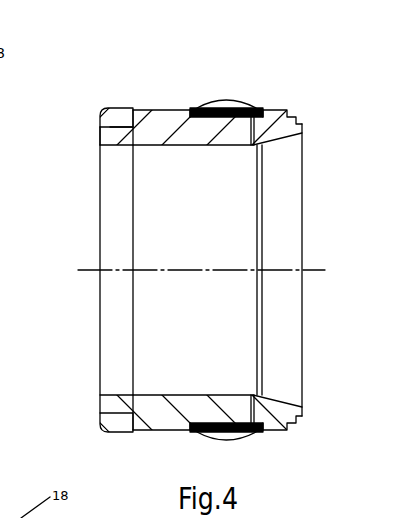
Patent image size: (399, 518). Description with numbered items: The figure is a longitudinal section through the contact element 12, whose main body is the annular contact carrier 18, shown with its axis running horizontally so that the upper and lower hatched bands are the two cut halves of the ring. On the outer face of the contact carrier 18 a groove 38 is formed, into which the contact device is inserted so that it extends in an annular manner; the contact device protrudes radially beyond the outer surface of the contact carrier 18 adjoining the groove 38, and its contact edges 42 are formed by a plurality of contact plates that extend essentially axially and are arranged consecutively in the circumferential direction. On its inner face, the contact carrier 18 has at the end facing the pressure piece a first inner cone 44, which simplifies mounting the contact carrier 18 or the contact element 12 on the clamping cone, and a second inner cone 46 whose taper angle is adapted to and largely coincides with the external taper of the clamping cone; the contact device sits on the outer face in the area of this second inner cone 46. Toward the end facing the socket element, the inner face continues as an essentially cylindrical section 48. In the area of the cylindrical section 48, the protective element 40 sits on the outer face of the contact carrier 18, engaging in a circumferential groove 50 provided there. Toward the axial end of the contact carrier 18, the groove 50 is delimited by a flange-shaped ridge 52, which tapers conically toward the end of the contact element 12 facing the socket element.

The contact element 12 is at (129, 88).
The contact carrier 18 is at (275, 111).
The groove 38 is at (180, 125).
The protective element 40 is at (114, 108).
The contact edges 42 is at (237, 100).
The first inner cone 44 is at (284, 142).
The second inner cone 46 is at (205, 148).
The cylindrical section 48 is at (136, 206).
The circumferential groove 50 is at (122, 130).
The flange-shaped ridge 52 is at (104, 130).